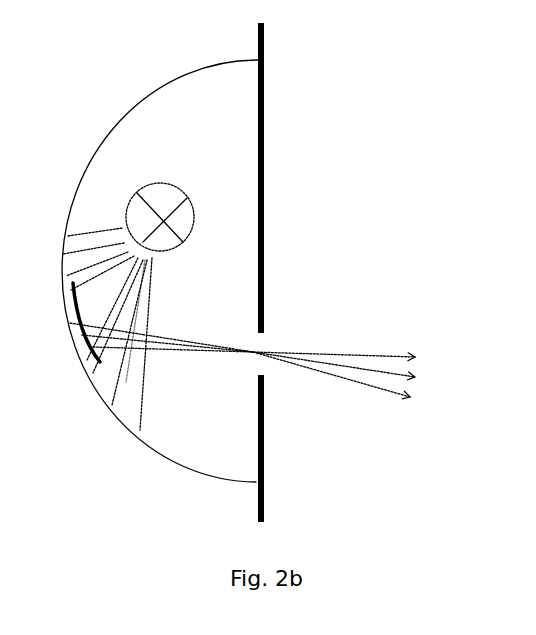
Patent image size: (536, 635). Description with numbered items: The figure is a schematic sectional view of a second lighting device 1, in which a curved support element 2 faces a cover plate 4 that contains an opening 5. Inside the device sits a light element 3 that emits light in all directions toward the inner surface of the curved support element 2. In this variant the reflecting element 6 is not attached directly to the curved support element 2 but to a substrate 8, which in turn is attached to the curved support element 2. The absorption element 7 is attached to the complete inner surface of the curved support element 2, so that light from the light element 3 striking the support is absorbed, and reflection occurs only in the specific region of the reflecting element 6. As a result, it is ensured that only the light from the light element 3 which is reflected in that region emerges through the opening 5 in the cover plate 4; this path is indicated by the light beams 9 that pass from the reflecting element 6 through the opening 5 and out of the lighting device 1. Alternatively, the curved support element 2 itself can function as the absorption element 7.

The lighting device 1 is at (306, 3).
The curved support element 2 is at (128, 114).
The light element 3 is at (186, 181).
The cover plate 4 is at (264, 199).
The opening 5 is at (263, 364).
The reflecting element 6 is at (94, 349).
The absorption element 7 is at (114, 406).
The substrate 8 is at (78, 321).
The light beams 9 is at (367, 348).